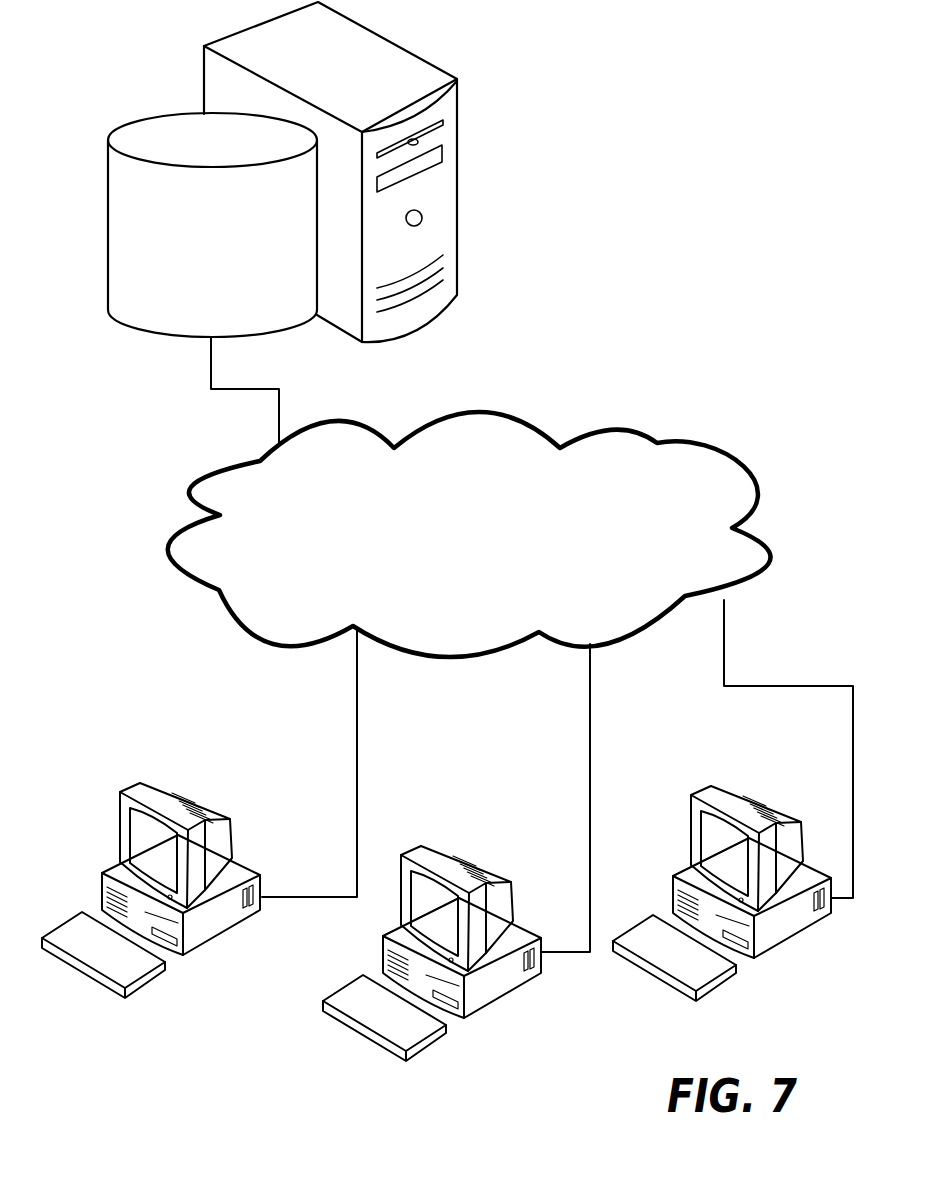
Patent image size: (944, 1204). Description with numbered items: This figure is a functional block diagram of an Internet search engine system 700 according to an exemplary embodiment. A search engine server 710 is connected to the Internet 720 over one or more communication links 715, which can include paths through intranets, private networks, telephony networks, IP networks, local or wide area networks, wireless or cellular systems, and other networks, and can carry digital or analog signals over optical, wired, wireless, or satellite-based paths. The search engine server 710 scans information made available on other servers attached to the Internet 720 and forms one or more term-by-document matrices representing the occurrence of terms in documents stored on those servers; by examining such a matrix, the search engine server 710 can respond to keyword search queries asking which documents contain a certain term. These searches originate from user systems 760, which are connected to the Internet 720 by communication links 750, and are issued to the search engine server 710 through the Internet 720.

The system 700 is at (630, 188).
The search engine server 710 is at (453, 118).
The communication link 715 is at (280, 409).
The Internet 720 is at (662, 432).
The communication links 750 is at (358, 747).
The user systems 760 is at (236, 832).